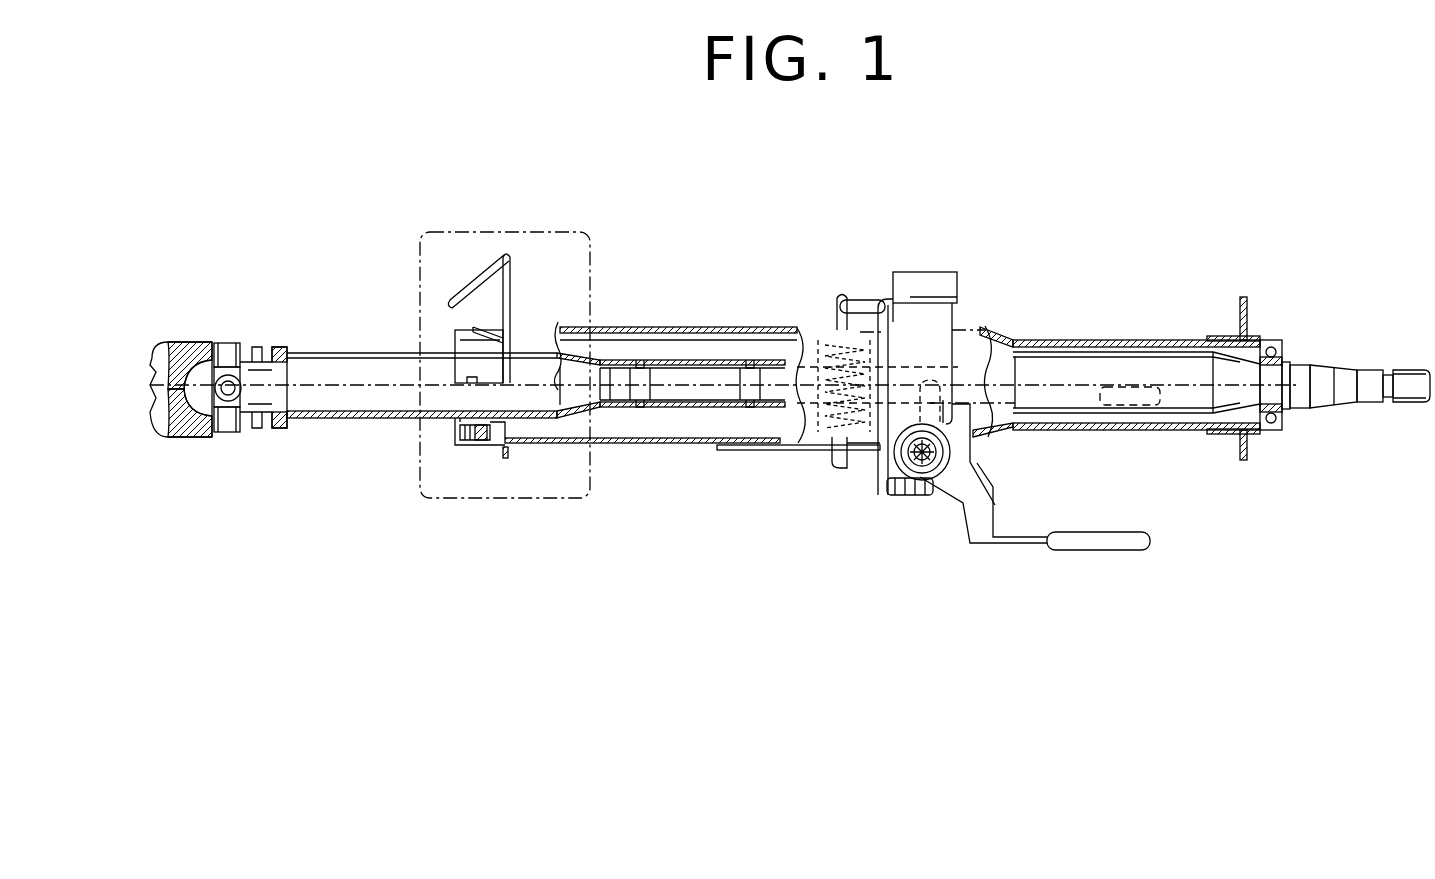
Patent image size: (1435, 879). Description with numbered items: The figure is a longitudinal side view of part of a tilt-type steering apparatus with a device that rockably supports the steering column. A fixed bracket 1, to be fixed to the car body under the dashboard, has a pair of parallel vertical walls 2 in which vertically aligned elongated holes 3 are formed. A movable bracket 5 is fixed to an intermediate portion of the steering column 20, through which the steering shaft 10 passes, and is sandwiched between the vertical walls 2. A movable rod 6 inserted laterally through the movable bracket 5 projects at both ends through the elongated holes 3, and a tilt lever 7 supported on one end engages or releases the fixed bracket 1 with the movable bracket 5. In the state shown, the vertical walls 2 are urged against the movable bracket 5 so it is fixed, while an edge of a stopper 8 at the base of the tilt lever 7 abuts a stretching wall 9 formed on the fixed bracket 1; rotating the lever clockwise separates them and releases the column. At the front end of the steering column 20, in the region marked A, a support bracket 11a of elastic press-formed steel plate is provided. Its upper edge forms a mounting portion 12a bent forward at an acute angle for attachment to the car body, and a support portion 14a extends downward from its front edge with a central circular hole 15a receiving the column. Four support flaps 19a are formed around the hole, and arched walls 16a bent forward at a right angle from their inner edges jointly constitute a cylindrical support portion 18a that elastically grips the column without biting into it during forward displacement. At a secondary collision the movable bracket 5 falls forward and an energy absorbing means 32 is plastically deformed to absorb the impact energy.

The fixed bracket 1 is at (957, 294).
The vertical walls 2 is at (930, 374).
The elongated holes 3 is at (915, 497).
The movable bracket 5 is at (892, 502).
The movable rod 6 is at (933, 460).
The tilt lever 7 is at (1102, 543).
The stopper 8 is at (1007, 424).
The stretching wall 9 is at (950, 417).
The steering shaft 10 is at (333, 420).
The steering column 20 is at (738, 326).
The energy absorbing means 32 is at (790, 450).
The energy absorbing region A is at (573, 229).
The support bracket 11a is at (509, 250).
The mounting portion 12a is at (474, 281).
The support portion 14a is at (512, 352).
The circular hole 15a is at (512, 432).
The arched walls 16a is at (490, 378).
The cylindrical support portion 18a is at (492, 450).
The support flaps 19a is at (505, 461).